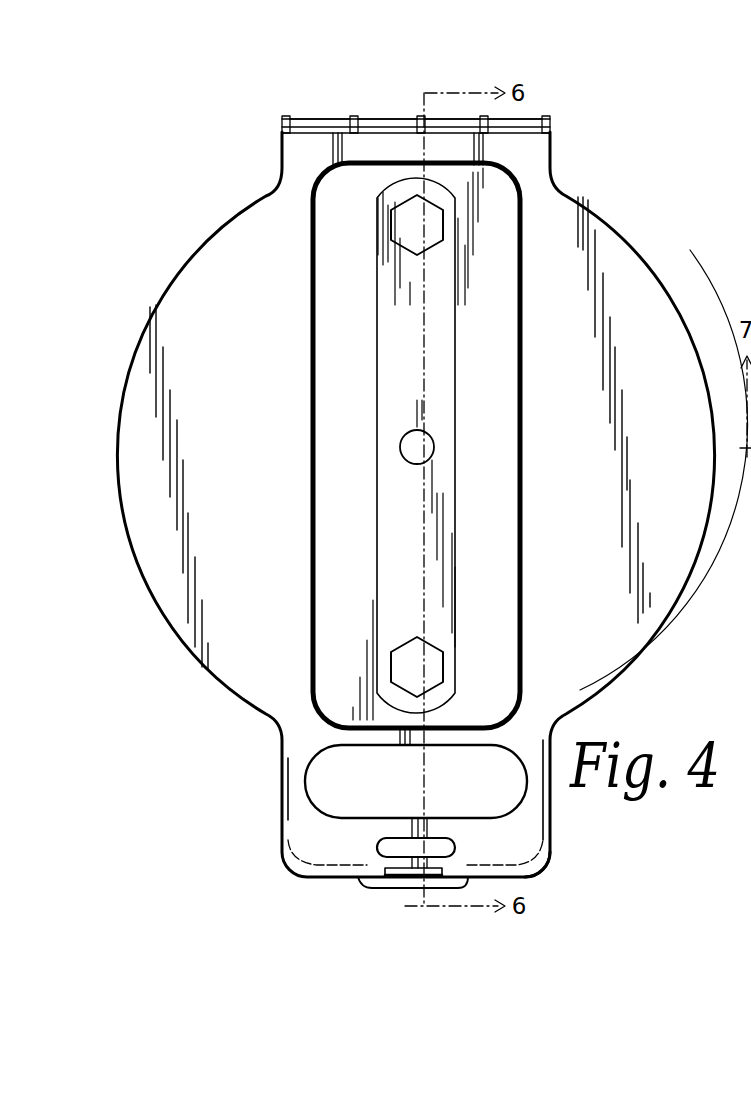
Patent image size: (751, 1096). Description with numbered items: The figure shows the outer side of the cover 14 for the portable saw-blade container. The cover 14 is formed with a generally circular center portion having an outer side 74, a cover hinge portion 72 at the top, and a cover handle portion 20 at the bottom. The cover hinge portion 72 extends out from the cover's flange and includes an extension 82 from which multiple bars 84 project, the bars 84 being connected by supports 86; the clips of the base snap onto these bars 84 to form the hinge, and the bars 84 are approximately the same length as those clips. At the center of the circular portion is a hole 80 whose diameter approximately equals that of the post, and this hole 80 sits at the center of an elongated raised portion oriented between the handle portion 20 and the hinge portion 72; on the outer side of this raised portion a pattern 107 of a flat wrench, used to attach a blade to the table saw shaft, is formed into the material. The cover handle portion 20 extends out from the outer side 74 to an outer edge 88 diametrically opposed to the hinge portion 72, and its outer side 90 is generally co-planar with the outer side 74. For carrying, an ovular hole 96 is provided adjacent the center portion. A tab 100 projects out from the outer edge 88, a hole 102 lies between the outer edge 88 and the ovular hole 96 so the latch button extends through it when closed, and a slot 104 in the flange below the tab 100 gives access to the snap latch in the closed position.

The cover 14 is at (642, 273).
The cover handle portion 20 is at (550, 727).
The cover hinge portion 72 is at (530, 152).
The outer side 74 is at (230, 423).
The hole 80 is at (417, 447).
The extension 82 is at (303, 157).
The bars 84 is at (315, 119).
The supports 86 is at (283, 120).
The outer edge 88 is at (535, 868).
The outer side 90 is at (303, 843).
The ovular hole 96 is at (313, 790).
The tab 100 is at (365, 882).
The hole 102 is at (500, 365).
The slot 104 is at (398, 872).
The pattern 107 is at (443, 372).